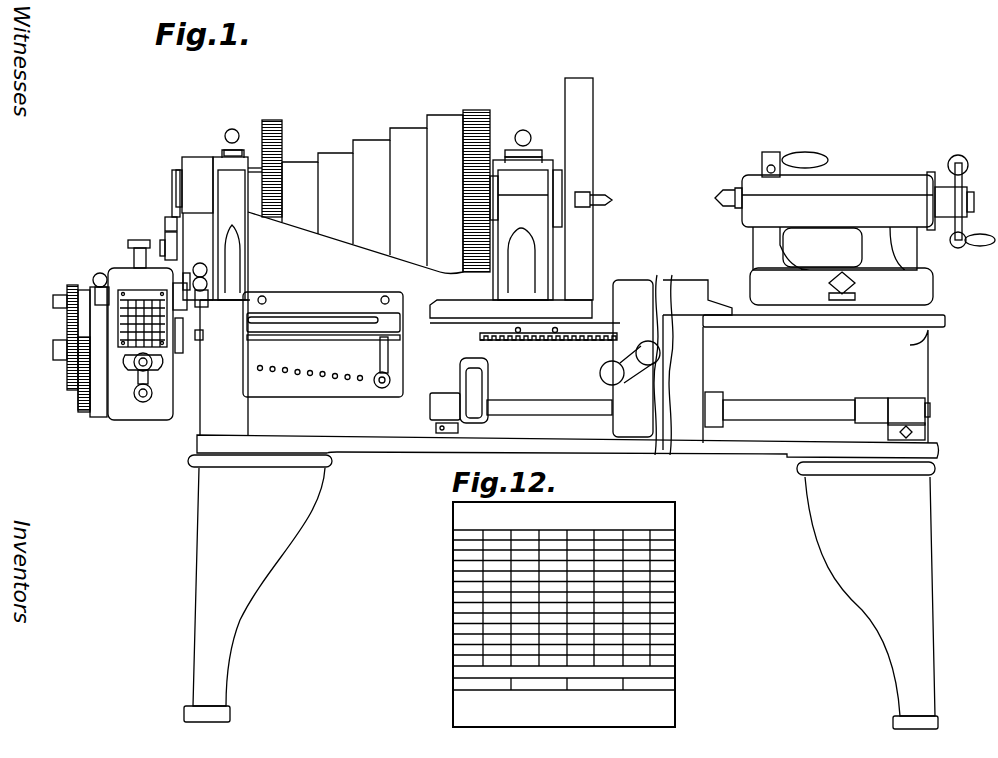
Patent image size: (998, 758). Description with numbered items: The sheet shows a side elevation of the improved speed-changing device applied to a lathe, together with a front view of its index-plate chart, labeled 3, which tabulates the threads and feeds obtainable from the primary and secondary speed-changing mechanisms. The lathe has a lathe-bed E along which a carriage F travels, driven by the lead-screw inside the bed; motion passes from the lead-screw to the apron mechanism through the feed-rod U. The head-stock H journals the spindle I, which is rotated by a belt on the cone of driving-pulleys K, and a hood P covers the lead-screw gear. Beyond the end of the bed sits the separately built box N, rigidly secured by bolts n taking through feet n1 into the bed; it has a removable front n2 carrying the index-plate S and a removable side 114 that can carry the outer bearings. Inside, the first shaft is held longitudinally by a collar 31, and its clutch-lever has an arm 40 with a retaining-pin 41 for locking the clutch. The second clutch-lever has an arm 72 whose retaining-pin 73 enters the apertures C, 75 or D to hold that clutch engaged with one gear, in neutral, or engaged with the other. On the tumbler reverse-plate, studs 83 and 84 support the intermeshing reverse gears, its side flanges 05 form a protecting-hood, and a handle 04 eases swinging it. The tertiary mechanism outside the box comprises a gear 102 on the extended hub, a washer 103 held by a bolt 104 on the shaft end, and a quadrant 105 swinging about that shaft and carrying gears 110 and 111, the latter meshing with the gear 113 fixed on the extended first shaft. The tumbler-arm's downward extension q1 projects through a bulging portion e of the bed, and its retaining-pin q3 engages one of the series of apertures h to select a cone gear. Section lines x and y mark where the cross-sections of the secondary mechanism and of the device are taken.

In FIG. 1, the change-gear box / index chart 3 is at (147, 344).
In FIG. 12, the change-gear box / index chart 3 is at (677, 580).
In FIG. 1, the collar 31 is at (97, 280).
In FIG. 1, the arm 40 is at (128, 260).
In FIG. 1, the retaining-pin 41 is at (130, 244).
In FIG. 1, the stud 84 is at (141, 246).
In FIG. 1, the stud 83 is at (168, 252).
In FIG. 1, the arm 72 is at (152, 378).
In FIG. 1, the retaining-pin 73 is at (134, 386).
In FIG. 1, the aperture 75 is at (154, 392).
In FIG. 1, the gear 102 is at (82, 408).
In FIG. 1, the washer 103 is at (80, 394).
In FIG. 1, the bolt 104 is at (62, 384).
In FIG. 1, the quadrant 105 is at (100, 400).
In FIG. 1, the gear 110 is at (60, 338).
In FIG. 1, the gear 111 is at (66, 330).
In FIG. 1, the gear 113 is at (68, 284).
In FIG. 1, the removable side 114 is at (132, 408).
In FIG. 1, the lathe-bed E is at (393, 462).
In FIG. 1, the head-stock H is at (240, 282).
In FIG. 1, the cone of driving-pulleys K is at (340, 157).
In FIG. 1, the hood P is at (188, 159).
In FIG. 1, the spindle I is at (176, 184).
In FIG. 1, the carriage F is at (632, 290).
In FIG. 1, the feed-rod U is at (536, 405).
In FIG. 1, the index-plate S is at (132, 280).
In FIG. 1, the aperture D is at (137, 360).
In FIG. 1, the aperture C is at (175, 354).
In FIG. 1, the box N is at (123, 451).
In FIG. 1, the bulging portion e is at (403, 326).
In FIG. 1, the apertures h is at (358, 372).
In FIG. 1, the bolts n is at (192, 348).
In FIG. 1, the feet n1 is at (204, 343).
In FIG. 1, the removable front n2 is at (158, 280).
In FIG. 1, the downward extension q1 is at (398, 359).
In FIG. 1, the retaining-pin q3 is at (382, 388).
In FIG. 1, the line xx x is at (143, 445).
In FIG. 1, the line yy y is at (330, 500).
In FIG. 1, the handle 04 is at (200, 266).
In FIG. 1, the side flanges 05 is at (168, 212).